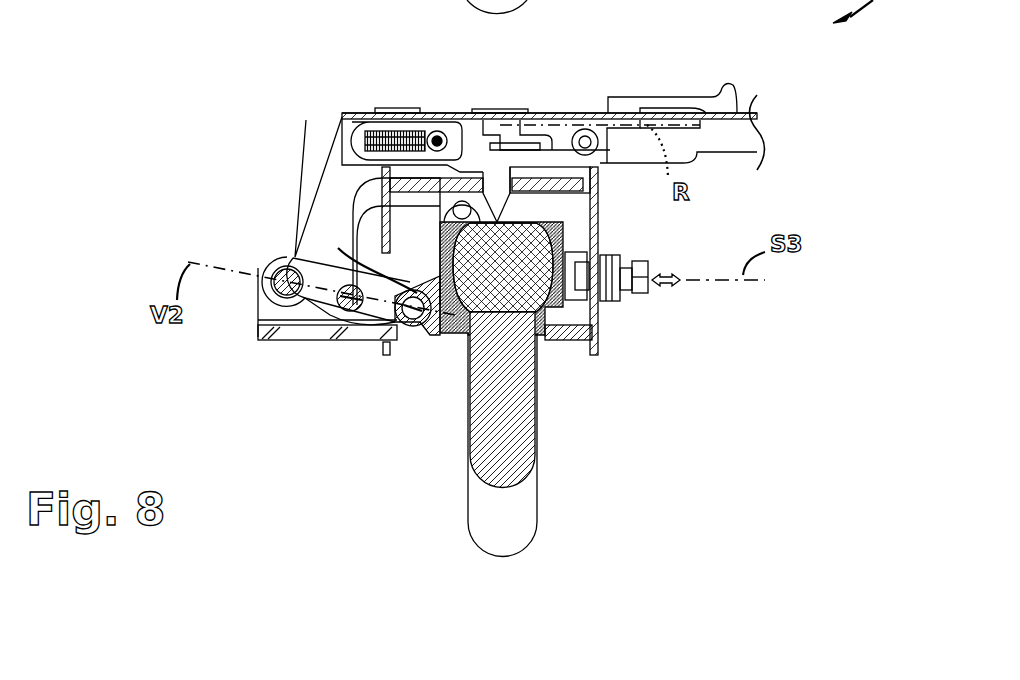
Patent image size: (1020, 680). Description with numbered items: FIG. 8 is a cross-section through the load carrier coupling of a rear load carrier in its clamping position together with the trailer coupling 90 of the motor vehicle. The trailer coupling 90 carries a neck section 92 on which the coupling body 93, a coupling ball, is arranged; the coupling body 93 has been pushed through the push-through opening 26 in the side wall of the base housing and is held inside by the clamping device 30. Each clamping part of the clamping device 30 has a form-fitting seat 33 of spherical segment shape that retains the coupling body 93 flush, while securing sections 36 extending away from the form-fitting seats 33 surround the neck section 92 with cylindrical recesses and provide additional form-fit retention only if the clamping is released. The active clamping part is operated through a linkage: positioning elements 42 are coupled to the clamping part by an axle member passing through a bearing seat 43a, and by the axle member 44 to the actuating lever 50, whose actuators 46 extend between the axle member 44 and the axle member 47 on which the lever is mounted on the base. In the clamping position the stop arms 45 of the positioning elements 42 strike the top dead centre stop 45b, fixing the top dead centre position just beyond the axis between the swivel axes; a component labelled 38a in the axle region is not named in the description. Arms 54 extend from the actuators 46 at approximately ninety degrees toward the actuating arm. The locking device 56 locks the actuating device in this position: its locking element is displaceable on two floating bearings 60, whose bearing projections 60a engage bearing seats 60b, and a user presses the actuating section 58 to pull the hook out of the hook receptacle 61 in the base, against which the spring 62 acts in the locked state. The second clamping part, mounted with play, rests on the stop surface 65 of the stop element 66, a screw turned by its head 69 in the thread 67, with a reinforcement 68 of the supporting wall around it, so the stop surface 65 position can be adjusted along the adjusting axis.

The push-through opening 26 is at (420, 338).
The clamping device 30 is at (546, 326).
The form-fitting seat 33 is at (461, 262).
The securing section 36 is at (460, 328).
The pin 38a is at (455, 200).
The positioning element 42 is at (385, 308).
The bearing seat 43a is at (362, 257).
The axle member 44 is at (353, 305).
The stop arm 45 is at (293, 258).
The top dead centre stop 45b is at (288, 265).
The actuator 46 is at (313, 305).
The axle member 47 is at (270, 278).
The actuating lever 50 is at (738, 141).
The arm 54 is at (321, 207).
The locking device 56 is at (637, 96).
The actuating section 58 is at (720, 97).
The floating bearing 60 is at (432, 133).
The bearing projection 60a is at (580, 133).
The bearing seat 60b is at (550, 145).
The hook receptacle 61 is at (512, 182).
The spring 62 is at (403, 137).
The stop surface 65 is at (543, 272).
The stop element 66 is at (648, 265).
The thread 67 is at (603, 256).
The reinforcement 68 is at (580, 289).
The head 69 is at (637, 292).
The trailer coupling 90 is at (538, 516).
The neck section 92 is at (458, 336).
The coupling body 93 is at (510, 237).